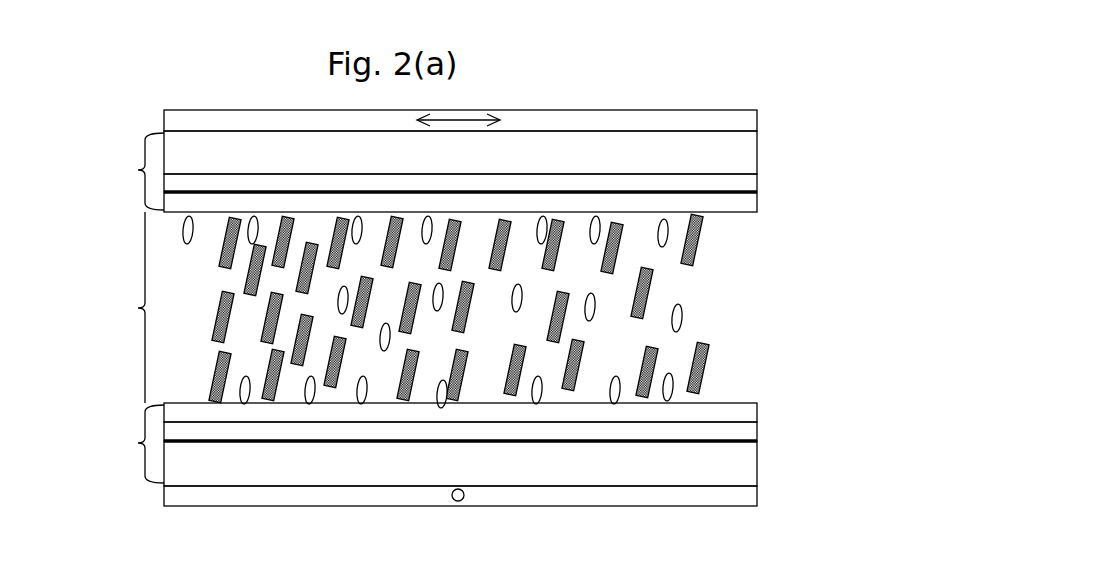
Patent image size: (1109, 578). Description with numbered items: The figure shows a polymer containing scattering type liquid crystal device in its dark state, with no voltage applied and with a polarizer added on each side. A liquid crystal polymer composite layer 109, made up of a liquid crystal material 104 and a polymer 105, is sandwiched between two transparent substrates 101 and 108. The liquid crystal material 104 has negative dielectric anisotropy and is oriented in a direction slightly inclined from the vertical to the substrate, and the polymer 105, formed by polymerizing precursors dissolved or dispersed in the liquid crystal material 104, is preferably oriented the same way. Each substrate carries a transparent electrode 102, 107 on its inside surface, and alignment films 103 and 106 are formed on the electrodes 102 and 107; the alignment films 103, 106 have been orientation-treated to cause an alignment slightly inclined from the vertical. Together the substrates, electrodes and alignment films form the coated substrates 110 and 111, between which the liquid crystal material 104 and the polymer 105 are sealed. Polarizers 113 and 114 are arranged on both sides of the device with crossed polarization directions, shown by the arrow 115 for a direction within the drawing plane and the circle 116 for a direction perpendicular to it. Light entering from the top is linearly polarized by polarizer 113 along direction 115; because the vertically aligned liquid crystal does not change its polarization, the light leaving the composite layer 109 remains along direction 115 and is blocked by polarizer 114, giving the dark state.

The transparent substrate 101 is at (757, 458).
The transparent electrode 102 is at (757, 428).
The alignment film 103 is at (757, 410).
The liquid crystal material 104 is at (710, 357).
The polymer 105 is at (683, 313).
The alignment film 106 is at (757, 205).
The transparent electrode 107 is at (757, 182).
The transparent substrate 108 is at (757, 151).
The liquid crystal polymer composite layer 109 is at (138, 308).
The coated substrate 110 is at (138, 443).
The coated substrate 111 is at (138, 170).
The polarizer 113 is at (757, 117).
The polarizer 114 is at (757, 497).
The arrow 115 is at (460, 117).
The circle 116 is at (467, 499).